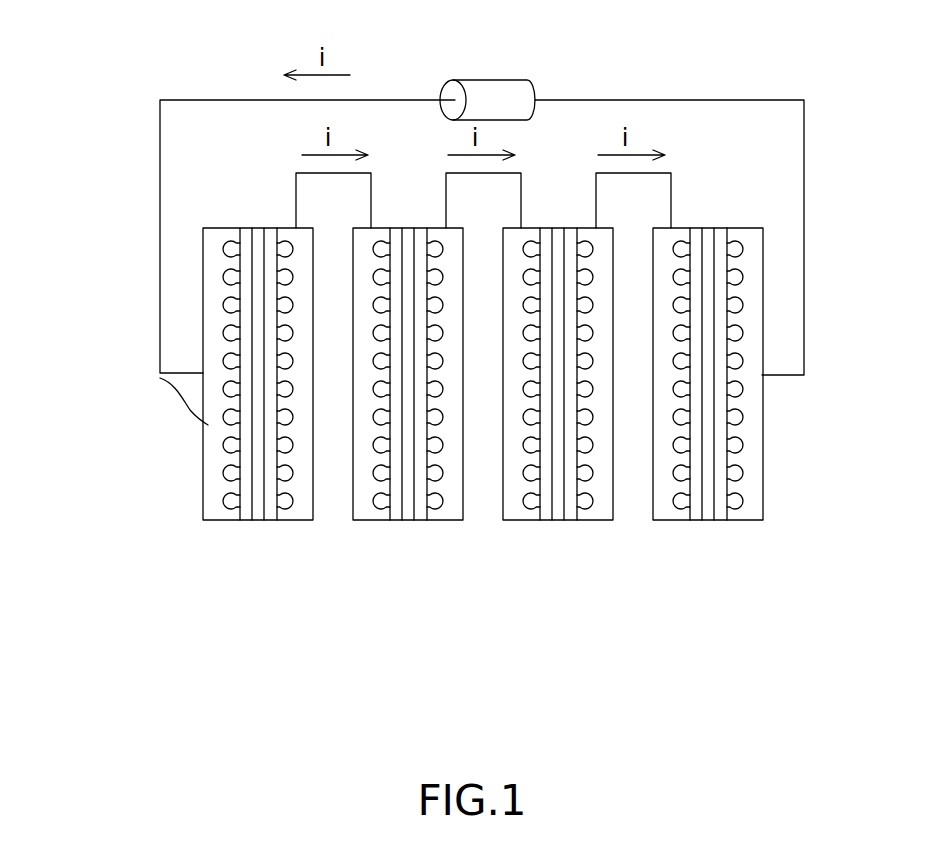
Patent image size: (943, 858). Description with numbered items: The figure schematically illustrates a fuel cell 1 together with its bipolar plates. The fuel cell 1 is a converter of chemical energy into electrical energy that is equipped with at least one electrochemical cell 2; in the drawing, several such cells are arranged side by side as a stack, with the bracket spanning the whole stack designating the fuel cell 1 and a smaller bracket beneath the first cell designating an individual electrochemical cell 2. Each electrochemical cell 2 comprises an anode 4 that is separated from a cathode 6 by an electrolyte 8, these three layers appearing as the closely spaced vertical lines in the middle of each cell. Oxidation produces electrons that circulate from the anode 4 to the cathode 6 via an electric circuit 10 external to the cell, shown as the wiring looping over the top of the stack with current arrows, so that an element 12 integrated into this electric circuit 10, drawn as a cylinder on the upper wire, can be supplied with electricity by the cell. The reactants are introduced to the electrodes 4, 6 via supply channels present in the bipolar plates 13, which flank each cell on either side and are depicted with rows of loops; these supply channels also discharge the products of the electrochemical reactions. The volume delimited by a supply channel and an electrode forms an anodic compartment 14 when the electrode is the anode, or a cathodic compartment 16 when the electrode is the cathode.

The fuel cell 1 is at (455, 491).
The electrochemical cell 2 is at (258, 463).
The anode 4 is at (226, 416).
The cathode 6 is at (286, 416).
The electrolyte 8 is at (252, 436).
The electric circuit 10 is at (296, 205).
The element 12 is at (488, 97).
The bipolar plates 13 is at (259, 422).
The anodic compartment 14 is at (561, 536).
The cathodic compartment 16 is at (708, 435).